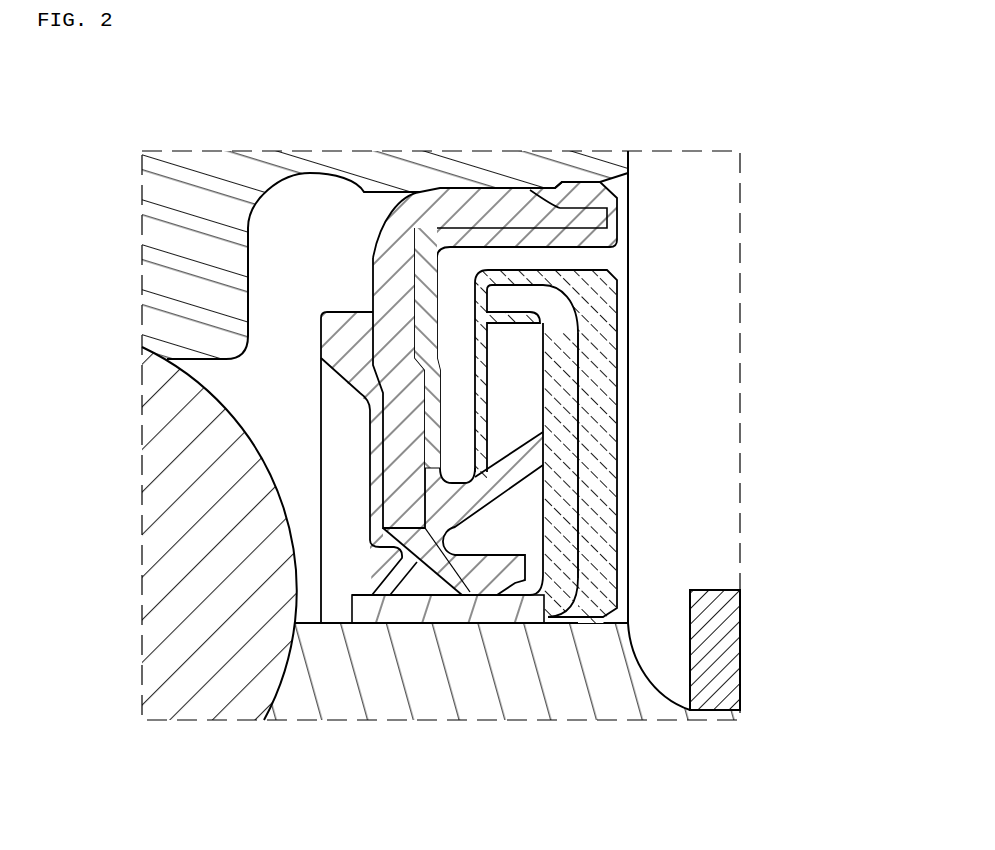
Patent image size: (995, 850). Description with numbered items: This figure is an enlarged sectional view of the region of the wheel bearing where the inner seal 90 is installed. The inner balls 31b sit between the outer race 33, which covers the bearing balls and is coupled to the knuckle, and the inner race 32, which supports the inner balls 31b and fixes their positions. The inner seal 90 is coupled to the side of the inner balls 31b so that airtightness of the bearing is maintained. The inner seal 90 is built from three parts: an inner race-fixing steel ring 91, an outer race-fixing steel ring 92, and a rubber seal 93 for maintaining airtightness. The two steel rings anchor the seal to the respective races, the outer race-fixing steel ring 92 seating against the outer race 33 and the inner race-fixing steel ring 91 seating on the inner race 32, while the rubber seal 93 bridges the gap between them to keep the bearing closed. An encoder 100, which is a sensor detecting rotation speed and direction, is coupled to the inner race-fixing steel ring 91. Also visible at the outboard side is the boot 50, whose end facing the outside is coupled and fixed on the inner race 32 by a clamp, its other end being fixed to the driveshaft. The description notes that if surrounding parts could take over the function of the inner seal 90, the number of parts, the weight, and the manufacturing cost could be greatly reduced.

The outer race 33 is at (162, 274).
The inner balls 31b is at (168, 567).
The inner race 32 is at (445, 706).
The boot 50 is at (728, 641).
The inner seal 90 is at (365, 258).
The inner race-fixing steel ring 91 is at (567, 343).
The outer race-fixing steel ring 92 is at (452, 205).
The rubber seal 93 is at (463, 495).
The encoder 100 is at (603, 413).